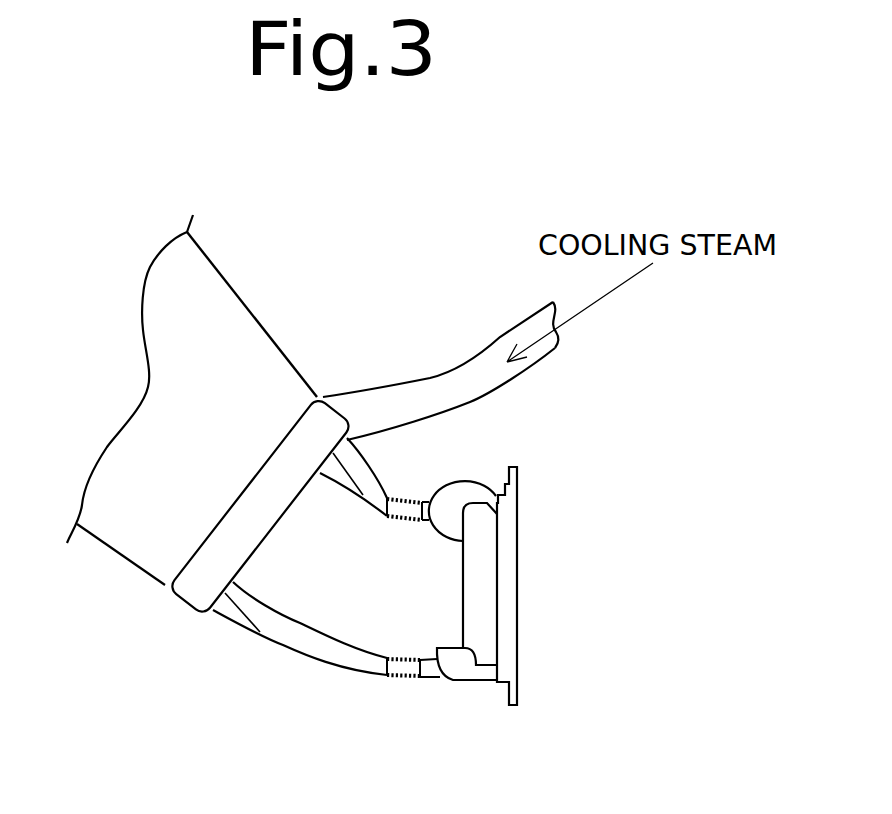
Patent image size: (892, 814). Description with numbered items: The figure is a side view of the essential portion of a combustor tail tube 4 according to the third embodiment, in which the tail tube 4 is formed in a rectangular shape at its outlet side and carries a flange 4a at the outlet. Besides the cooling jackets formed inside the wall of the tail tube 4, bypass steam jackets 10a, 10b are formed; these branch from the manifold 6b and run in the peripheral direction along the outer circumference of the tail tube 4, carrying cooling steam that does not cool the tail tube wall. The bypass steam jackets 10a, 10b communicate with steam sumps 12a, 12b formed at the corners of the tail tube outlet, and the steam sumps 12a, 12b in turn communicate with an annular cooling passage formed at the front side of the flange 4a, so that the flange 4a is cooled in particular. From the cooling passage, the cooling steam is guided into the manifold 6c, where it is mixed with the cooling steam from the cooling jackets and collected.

The tail tube 4 is at (277, 306).
The flange 4a is at (507, 563).
The manifold 6b is at (193, 590).
The manifold 6c is at (477, 627).
The bypass steam jacket 10a is at (358, 472).
The bypass steam jacket 10b is at (316, 656).
The steam sump 12a is at (458, 497).
The steam sump 12b is at (457, 665).